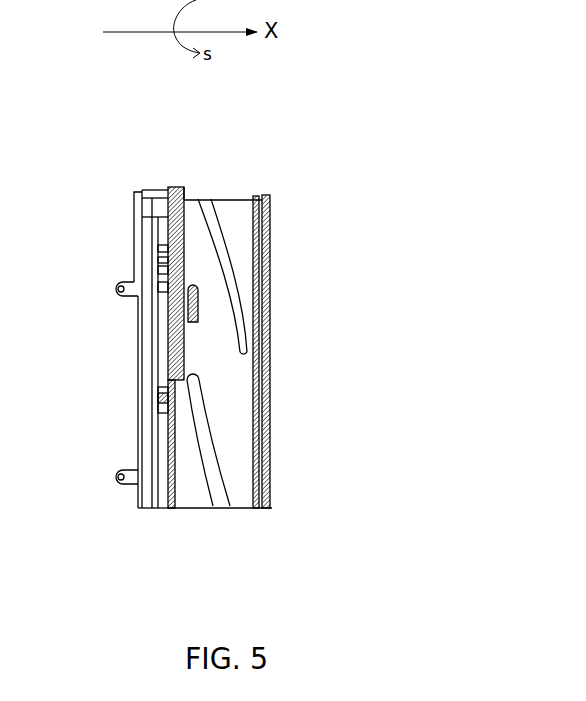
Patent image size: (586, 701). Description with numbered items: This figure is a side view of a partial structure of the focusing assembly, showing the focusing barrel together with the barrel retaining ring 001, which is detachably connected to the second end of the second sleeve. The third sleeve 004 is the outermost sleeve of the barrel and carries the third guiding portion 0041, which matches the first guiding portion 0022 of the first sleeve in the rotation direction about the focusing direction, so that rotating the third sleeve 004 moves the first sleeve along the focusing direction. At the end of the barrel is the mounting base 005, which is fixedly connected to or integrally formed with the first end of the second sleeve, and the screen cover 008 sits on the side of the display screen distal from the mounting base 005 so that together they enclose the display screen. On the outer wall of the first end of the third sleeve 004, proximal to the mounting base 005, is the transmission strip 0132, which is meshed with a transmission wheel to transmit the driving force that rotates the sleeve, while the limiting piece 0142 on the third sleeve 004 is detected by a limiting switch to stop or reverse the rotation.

The screen cover 008 is at (145, 193).
The third sleeve 004 is at (240, 218).
The third guiding portion 0041 is at (207, 205).
The transmission strip 0132 is at (181, 261).
The limiting piece 0142 is at (200, 303).
The first guiding portion 0022 is at (250, 352).
The mounting base 005 is at (161, 481).
The barrel retaining ring 001 is at (259, 503).